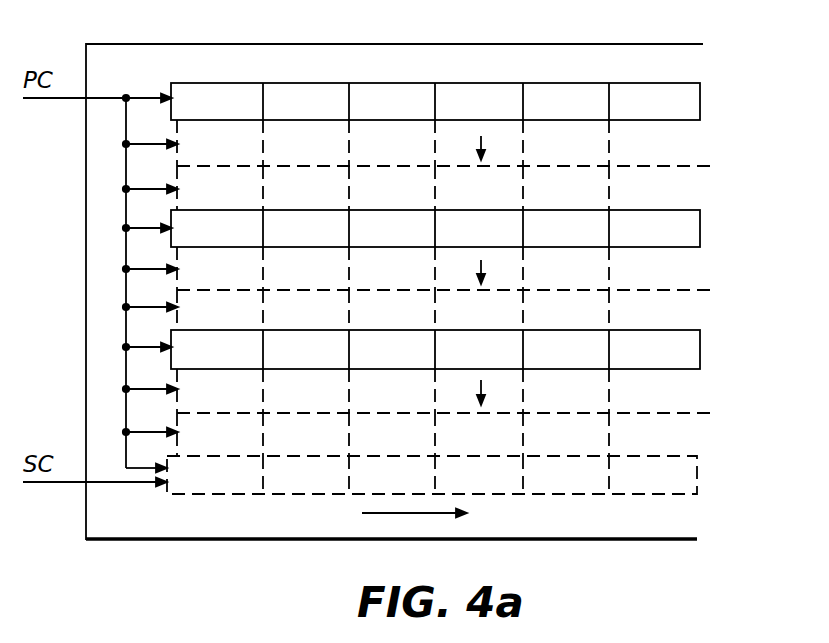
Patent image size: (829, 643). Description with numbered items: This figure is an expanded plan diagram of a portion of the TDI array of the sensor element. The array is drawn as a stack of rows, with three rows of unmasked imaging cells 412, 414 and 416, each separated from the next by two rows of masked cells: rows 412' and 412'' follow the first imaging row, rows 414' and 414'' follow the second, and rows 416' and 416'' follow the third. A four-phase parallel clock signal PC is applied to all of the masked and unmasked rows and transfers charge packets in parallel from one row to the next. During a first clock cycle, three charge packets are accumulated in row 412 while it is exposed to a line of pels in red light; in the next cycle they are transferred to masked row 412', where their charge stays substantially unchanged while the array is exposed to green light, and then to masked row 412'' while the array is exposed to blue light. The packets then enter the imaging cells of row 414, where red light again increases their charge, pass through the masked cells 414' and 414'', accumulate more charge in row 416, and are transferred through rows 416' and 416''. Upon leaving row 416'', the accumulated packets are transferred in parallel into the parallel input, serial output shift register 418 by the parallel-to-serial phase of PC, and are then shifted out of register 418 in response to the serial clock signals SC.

The row of imaging cells 412 is at (442, 92).
The row of masked cells 412' is at (445, 143).
The row of masked cells 412'' is at (446, 188).
The row of imaging cells 414 is at (442, 228).
The row of masked cells 414' is at (445, 268).
The row of masked cells 414'' is at (446, 310).
The row of imaging cells 416 is at (442, 349).
The row of masked cells 416' is at (445, 391).
The row of masked cells 416'' is at (446, 434).
The parallel input, serial output shift register 418 is at (690, 477).